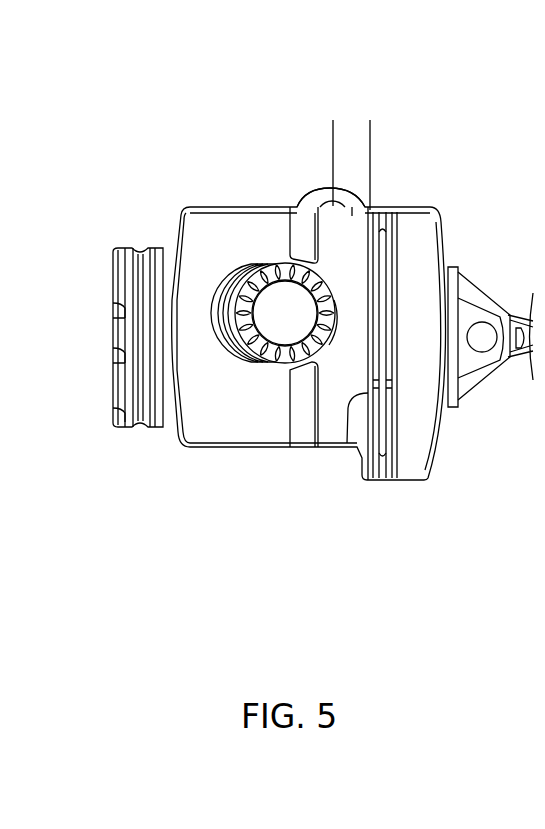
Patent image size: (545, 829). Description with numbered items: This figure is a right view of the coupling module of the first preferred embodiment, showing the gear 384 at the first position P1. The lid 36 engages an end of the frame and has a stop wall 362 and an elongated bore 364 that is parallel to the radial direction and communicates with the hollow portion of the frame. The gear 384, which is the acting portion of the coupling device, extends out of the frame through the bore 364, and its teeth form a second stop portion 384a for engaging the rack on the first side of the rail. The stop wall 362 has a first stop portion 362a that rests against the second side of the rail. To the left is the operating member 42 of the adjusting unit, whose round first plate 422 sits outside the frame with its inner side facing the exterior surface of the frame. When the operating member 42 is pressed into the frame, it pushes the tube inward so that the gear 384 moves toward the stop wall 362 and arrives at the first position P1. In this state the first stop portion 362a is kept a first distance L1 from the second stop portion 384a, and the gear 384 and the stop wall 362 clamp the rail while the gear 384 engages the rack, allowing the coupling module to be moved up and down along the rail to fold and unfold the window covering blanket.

The lid 36 is at (225, 428).
The stop wall 362 is at (387, 217).
The first stop portion 362a is at (348, 447).
The elongated bore 364 is at (220, 277).
The gear 384 is at (283, 322).
The second stop portion 384a is at (328, 345).
The operating member 42 is at (95, 268).
The first plate 422 is at (113, 283).
The first position P1 is at (265, 248).
The first distance L1 is at (293, 128).